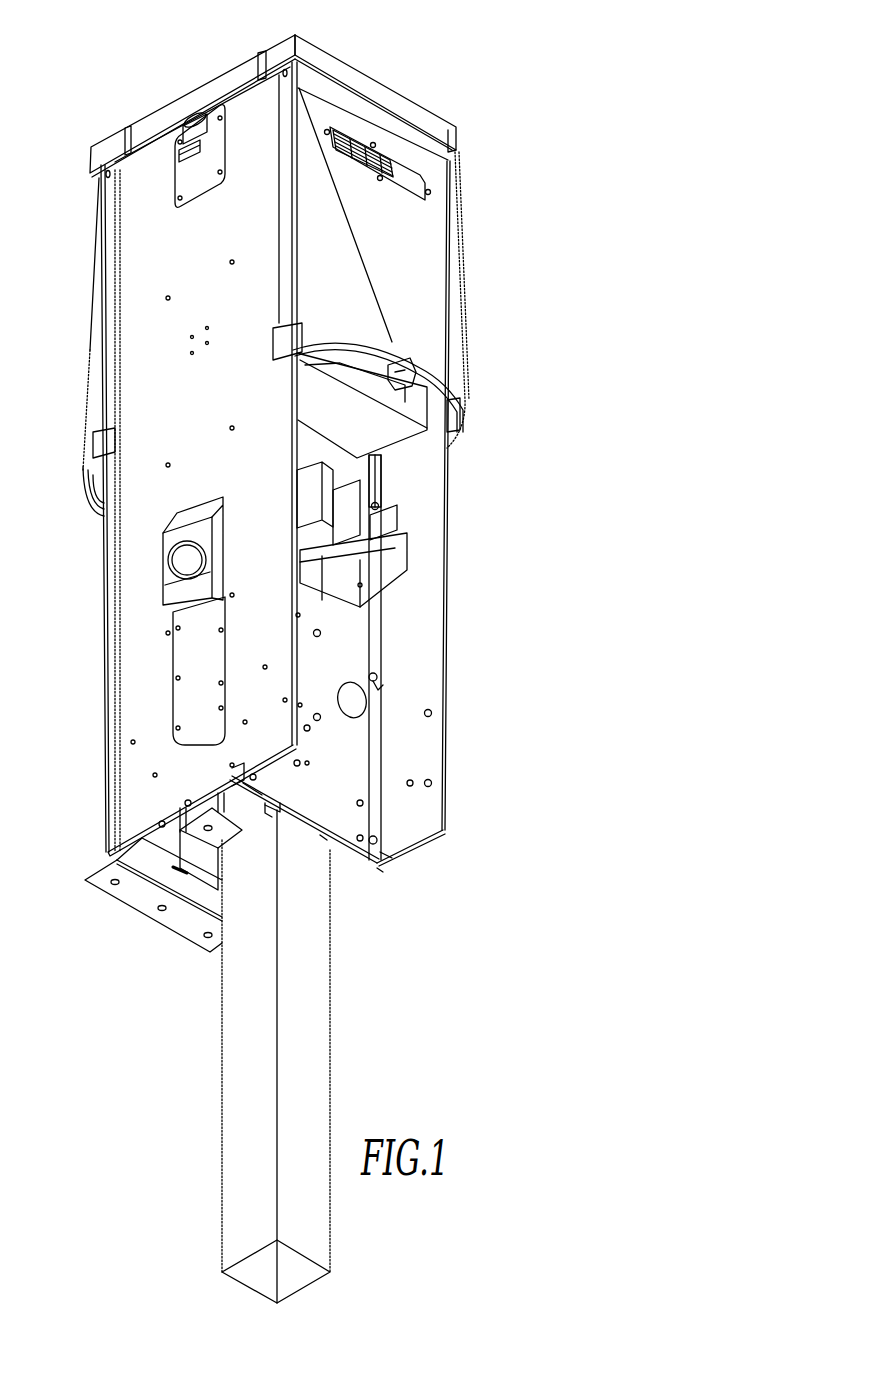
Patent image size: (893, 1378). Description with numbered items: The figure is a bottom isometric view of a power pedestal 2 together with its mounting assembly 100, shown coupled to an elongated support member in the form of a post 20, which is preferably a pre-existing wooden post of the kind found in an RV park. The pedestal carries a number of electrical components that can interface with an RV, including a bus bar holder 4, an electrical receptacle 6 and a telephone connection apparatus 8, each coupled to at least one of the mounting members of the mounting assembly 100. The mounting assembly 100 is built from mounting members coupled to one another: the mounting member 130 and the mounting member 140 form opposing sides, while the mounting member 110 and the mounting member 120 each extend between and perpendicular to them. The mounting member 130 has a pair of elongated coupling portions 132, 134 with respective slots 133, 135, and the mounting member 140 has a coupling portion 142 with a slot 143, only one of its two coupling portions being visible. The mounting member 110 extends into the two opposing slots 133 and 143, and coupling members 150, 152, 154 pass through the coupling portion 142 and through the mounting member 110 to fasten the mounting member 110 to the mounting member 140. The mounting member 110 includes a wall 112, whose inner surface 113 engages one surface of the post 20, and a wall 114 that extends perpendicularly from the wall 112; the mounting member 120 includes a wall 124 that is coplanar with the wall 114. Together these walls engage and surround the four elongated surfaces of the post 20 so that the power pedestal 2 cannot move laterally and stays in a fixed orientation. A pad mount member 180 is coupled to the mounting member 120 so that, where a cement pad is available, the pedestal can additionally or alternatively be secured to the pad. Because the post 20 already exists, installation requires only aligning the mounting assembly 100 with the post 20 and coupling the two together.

The power pedestal 2 is at (507, 143).
The mounting assembly 100 is at (505, 248).
The electrical receptacle 6 is at (410, 377).
The coupling member 154 is at (377, 503).
The bus bar holder 4 is at (403, 547).
The mounting member 140 is at (423, 587).
The mounting member 130 is at (147, 515).
The telephone connection apparatus 8 is at (185, 563).
The mounting member 110 is at (352, 642).
The coupling member 152 is at (373, 678).
The mounting member 120 is at (215, 800).
The coupling portion 132 is at (240, 772).
The slot 135 is at (186, 800).
The slot 133 is at (250, 790).
The wall 112 is at (330, 797).
The coupling portion 134 is at (160, 822).
The wall 124 is at (225, 812).
The wall 114 is at (267, 808).
The inner surface 113 is at (322, 837).
The coupling member 150 is at (373, 840).
The coupling portion 142 is at (385, 858).
The slot 143 is at (377, 873).
The pad mount member 180 is at (180, 942).
The post 20 is at (318, 1035).